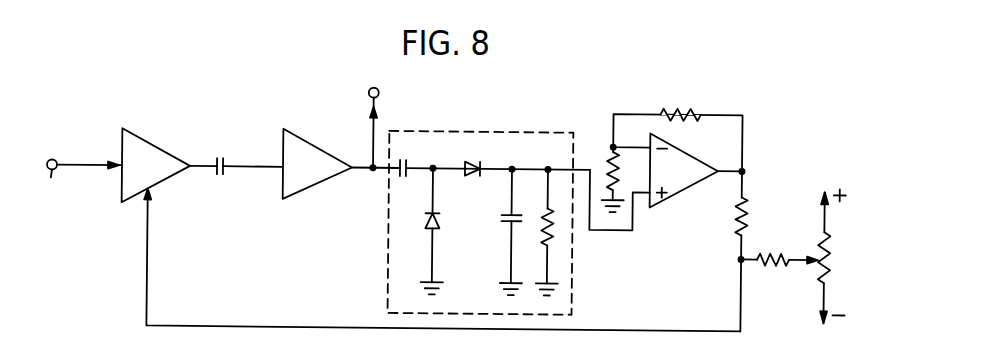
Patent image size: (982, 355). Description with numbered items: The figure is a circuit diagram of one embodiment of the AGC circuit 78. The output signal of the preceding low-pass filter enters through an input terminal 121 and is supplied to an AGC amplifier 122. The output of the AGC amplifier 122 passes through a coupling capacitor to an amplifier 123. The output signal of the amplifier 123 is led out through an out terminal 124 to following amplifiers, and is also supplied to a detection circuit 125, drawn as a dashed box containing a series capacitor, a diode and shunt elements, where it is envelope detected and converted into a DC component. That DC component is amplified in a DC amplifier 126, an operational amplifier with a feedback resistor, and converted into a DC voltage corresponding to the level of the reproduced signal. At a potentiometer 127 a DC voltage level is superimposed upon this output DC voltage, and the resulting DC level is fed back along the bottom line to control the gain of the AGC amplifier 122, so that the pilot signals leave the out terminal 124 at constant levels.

The AGC circuit 78 is at (291, 103).
The input terminal 121 is at (53, 167).
The AGC amplifier 122 is at (122, 139).
The amplifier 123 is at (305, 189).
The out terminal 124 is at (368, 92).
The detection circuit 125 is at (454, 131).
The DC amplifier 126 is at (681, 189).
The potentiometer 127 is at (820, 272).